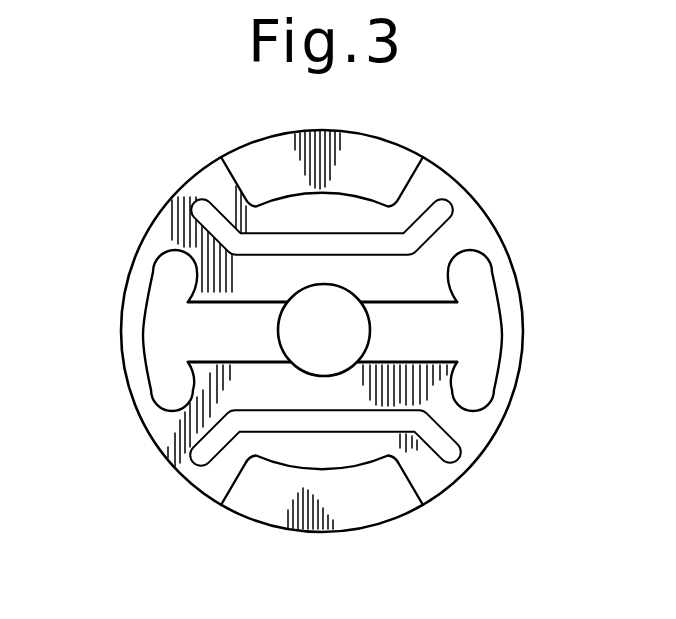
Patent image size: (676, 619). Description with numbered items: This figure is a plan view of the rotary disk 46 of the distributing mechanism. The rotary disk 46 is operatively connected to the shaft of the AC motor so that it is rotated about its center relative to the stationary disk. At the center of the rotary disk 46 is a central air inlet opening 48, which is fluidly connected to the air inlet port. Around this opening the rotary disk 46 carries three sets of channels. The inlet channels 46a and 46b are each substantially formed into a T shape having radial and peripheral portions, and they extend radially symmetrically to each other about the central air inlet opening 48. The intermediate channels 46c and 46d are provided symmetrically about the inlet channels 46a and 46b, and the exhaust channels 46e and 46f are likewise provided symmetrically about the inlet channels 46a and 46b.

The rotary disk 46 is at (462, 205).
The inlet channel 46a is at (508, 331).
The inlet channel 46b is at (134, 331).
The intermediate channel 46c is at (265, 255).
The intermediate channel 46d is at (400, 403).
The exhaust channel 46e is at (237, 182).
The exhaust channel 46f is at (421, 507).
The central air inlet opening 48 is at (337, 315).